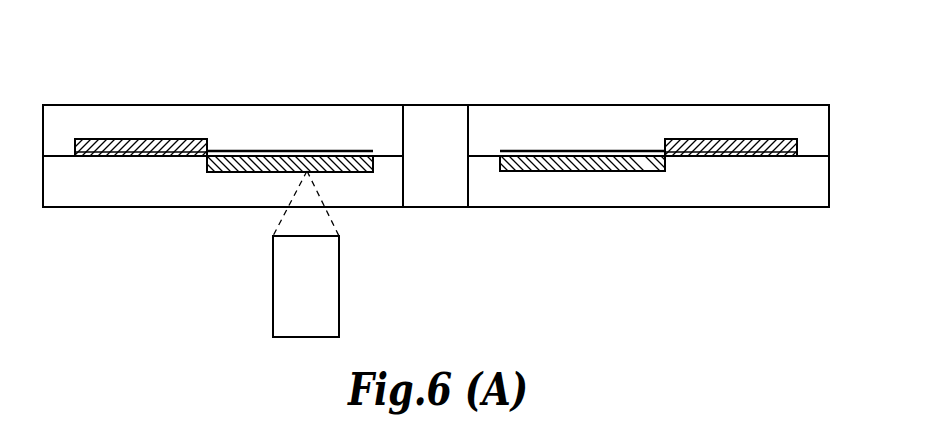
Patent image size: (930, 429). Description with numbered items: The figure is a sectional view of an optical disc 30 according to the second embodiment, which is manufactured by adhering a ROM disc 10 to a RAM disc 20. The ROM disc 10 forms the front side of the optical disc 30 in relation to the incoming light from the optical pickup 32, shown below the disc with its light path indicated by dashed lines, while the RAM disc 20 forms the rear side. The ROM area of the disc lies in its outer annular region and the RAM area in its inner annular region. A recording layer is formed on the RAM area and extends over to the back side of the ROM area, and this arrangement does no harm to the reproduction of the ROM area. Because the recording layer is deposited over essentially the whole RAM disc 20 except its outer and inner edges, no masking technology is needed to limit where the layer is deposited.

The ROM disc 10 is at (691, 210).
The RAM disc 20 is at (646, 93).
The optical disc 30 is at (693, 28).
The optical pickup 32 is at (341, 304).